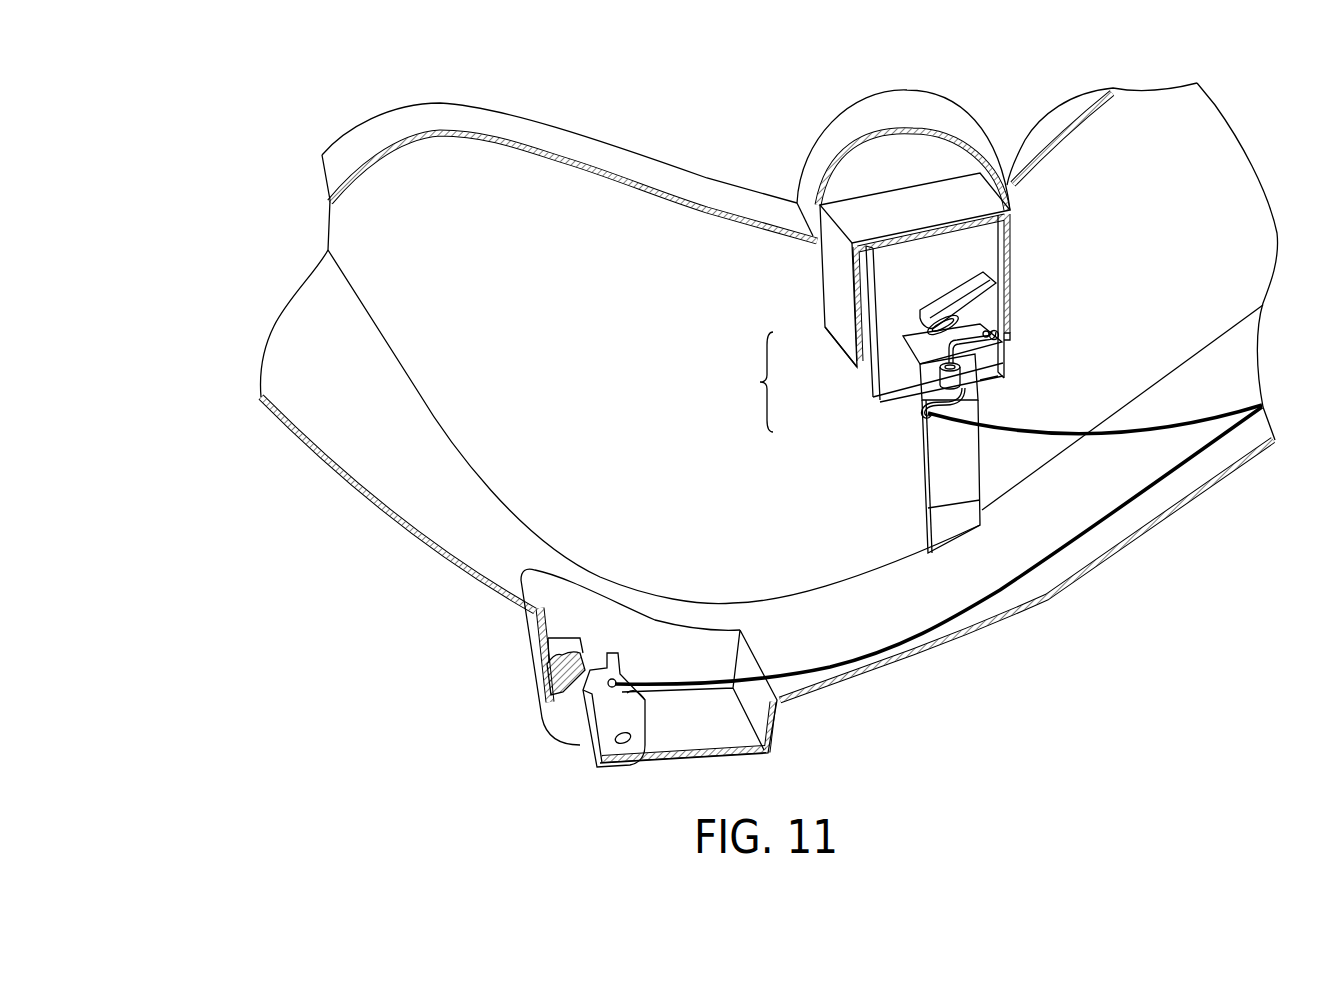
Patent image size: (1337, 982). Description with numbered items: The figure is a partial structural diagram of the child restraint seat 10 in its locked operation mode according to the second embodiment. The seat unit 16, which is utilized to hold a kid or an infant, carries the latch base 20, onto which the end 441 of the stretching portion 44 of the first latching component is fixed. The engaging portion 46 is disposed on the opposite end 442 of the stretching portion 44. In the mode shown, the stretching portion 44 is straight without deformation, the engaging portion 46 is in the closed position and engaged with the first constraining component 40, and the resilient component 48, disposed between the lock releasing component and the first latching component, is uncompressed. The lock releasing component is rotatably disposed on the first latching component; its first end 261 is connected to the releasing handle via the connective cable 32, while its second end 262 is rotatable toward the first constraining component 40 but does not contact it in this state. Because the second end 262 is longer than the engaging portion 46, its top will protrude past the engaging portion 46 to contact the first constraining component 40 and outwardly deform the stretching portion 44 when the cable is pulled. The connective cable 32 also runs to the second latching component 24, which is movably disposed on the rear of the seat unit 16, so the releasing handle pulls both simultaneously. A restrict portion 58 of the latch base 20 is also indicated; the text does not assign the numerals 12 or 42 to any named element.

The child restraint seat 10 is at (265, 95).
The seat unit 16 is at (608, 153).
The housing wall 12 is at (862, 298).
The first constraining component 40 is at (951, 303).
The second end 262 is at (968, 338).
The first end 261 is at (978, 389).
The opposite end 442 is at (999, 341).
The restrict portion 58 is at (1008, 334).
The engaging portion 46 is at (930, 347).
The resilient component 48 is at (963, 378).
The stretching portion 44 is at (947, 456).
The end 441 is at (915, 486).
The latch base 20 is at (940, 523).
The connective cable 32 is at (1148, 432).
The fixing block 42 is at (555, 677).
The second latching component 24 is at (617, 720).